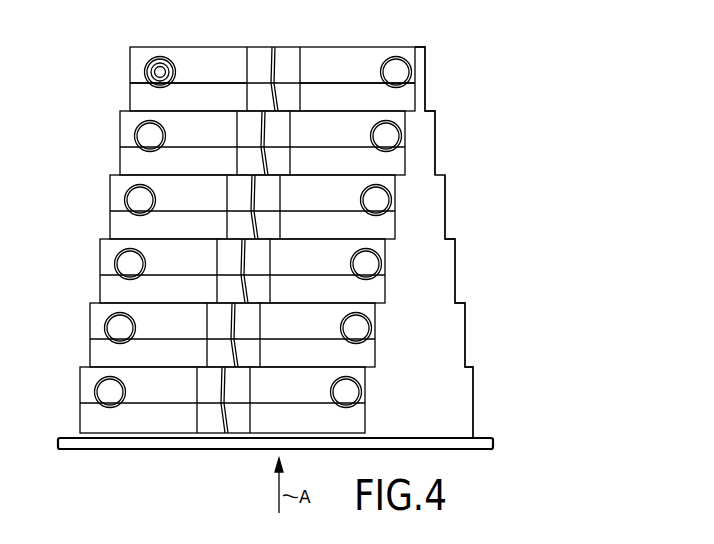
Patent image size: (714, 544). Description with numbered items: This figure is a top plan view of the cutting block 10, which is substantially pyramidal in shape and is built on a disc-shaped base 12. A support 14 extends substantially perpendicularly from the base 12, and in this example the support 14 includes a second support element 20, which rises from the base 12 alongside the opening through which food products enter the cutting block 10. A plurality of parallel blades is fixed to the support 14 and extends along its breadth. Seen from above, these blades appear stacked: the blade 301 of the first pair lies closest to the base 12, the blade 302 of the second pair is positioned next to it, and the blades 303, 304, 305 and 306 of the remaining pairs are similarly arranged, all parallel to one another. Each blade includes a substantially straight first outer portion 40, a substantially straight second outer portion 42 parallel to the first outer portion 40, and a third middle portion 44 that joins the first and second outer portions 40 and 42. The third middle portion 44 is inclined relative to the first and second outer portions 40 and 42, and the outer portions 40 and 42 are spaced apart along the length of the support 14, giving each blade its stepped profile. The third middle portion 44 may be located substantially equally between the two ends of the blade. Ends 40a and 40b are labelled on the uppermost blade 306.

The cutting block 10 is at (578, 240).
The base 12 is at (494, 443).
The support 14 is at (470, 153).
The second support element 20 is at (445, 203).
The blade of first pair 301 is at (88, 417).
The blade of second pair 302 is at (95, 352).
The blade of third pair 303 is at (108, 287).
The blade of fourth pair 304 is at (118, 223).
The blade of fifth pair 305 is at (127, 157).
The blade of sixth pair 306 is at (141, 53).
The first outer portion 40 is at (208, 58).
The first hole 40a is at (131, 78).
The second hole 40b is at (412, 82).
The second outer portion 42 is at (348, 57).
The third middle portion 44 is at (283, 57).